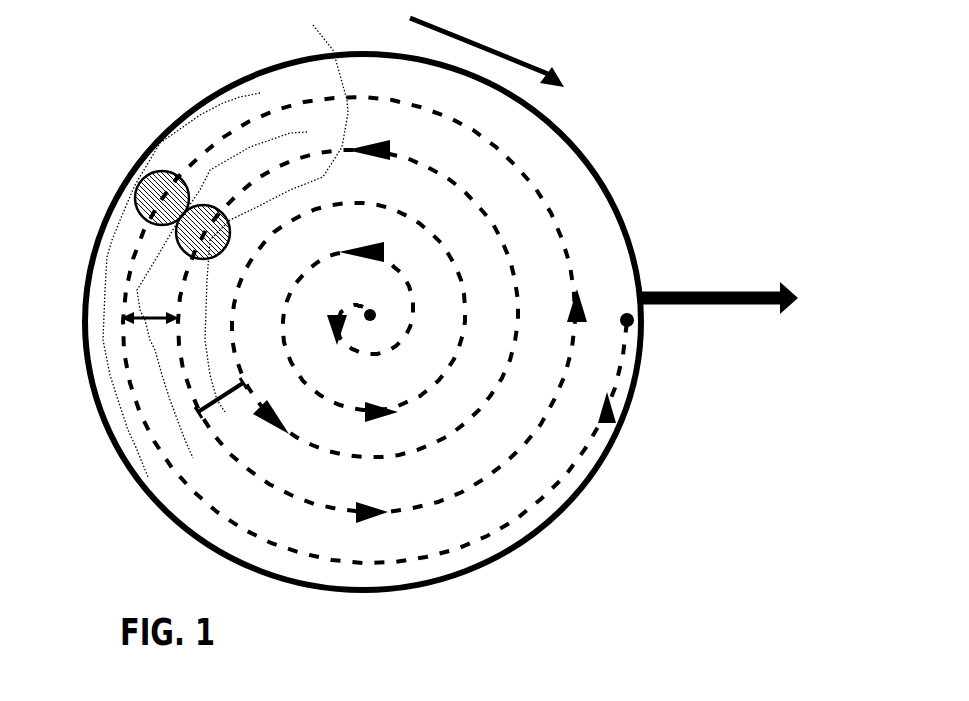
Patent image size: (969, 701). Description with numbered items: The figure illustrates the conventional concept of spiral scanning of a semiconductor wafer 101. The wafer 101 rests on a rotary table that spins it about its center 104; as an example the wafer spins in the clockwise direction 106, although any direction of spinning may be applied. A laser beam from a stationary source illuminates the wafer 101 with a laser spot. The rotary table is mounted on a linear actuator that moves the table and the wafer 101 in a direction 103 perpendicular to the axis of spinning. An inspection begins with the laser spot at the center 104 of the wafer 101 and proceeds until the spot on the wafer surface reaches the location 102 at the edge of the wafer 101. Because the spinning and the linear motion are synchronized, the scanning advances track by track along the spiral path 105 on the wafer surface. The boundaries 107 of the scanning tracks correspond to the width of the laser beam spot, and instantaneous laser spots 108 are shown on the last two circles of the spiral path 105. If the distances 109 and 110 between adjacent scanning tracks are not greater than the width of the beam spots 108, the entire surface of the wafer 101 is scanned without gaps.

The semiconductor wafer 101 is at (593, 487).
The location at the edge of the wafer 102 is at (640, 328).
The direction of linear motion 103 is at (713, 292).
The center of the wafer 104 is at (542, 239).
The spiral path 105 is at (419, 330).
The clockwise direction of spinning 106 is at (533, 65).
The boundaries of the scanning tracks 107 is at (225, 243).
The instantaneous laser spots 108 is at (182, 160).
The distance between adjacent scanning tracks 109 is at (113, 246).
The distance between adjacent scanning tracks 110 is at (152, 417).